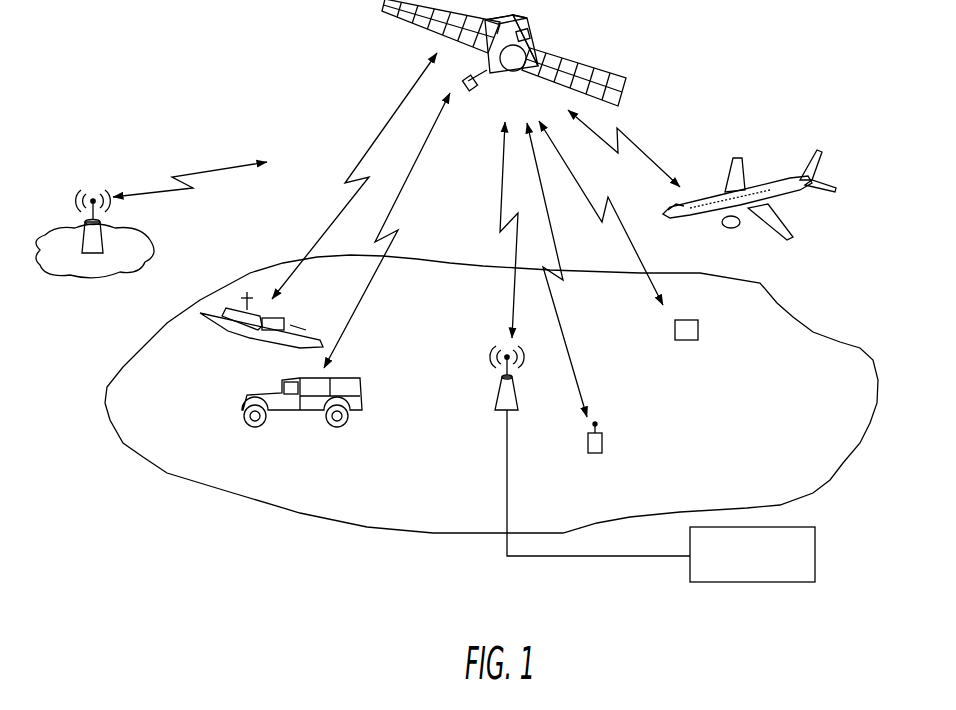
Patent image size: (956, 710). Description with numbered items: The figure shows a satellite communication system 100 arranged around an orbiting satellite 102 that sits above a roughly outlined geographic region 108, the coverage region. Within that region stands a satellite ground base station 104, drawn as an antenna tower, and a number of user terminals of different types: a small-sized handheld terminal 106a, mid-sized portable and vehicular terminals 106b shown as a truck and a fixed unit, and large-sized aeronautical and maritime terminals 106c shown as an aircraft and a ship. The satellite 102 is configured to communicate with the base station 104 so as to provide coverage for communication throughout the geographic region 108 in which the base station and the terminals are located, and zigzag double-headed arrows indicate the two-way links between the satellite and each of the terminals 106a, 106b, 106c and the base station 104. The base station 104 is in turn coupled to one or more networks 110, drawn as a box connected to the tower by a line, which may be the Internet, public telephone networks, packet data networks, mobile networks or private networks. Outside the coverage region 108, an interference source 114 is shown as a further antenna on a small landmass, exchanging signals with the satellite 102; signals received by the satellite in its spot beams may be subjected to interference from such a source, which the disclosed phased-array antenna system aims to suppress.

The satellite communication system 100 is at (308, 62).
The satellite 102 is at (537, 43).
The satellite ground base station 104 is at (498, 385).
The small-sized handheld terminal 106a is at (602, 438).
The mid-sized portable and vehicular terminal 106b is at (688, 342).
The large-sized aeronautical and maritime terminal 106c is at (253, 337).
The geographic region 108 is at (260, 272).
The network 110 is at (752, 583).
The interference source 114 is at (90, 257).